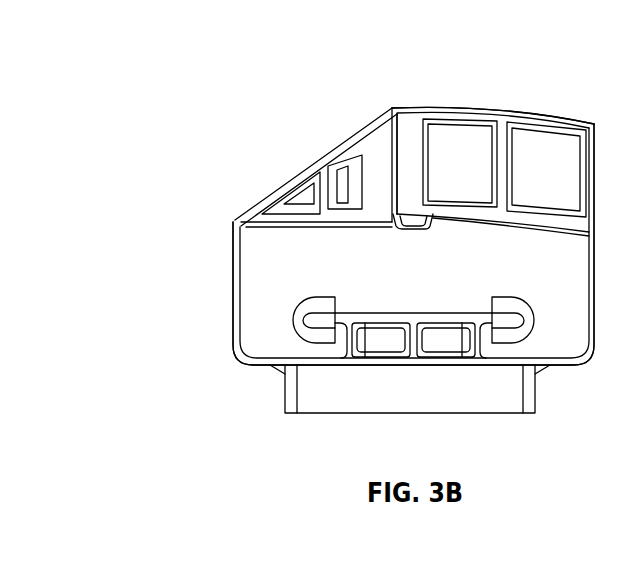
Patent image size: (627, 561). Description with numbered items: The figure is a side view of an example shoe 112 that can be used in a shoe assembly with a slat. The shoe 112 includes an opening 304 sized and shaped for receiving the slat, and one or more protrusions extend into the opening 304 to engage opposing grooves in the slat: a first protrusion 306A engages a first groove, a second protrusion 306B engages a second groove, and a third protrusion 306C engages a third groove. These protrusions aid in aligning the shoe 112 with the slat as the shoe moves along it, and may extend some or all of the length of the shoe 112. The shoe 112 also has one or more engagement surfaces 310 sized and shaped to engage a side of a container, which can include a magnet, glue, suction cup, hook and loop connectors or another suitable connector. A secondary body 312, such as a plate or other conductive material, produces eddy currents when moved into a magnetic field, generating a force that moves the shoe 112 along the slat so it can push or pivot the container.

The shoe 112 is at (213, 140).
The opening 304 is at (243, 253).
The engagement surfaces 310 is at (407, 118).
The first protrusion 306A is at (420, 231).
The second protrusion 306B is at (294, 321).
The third protrusion 306C is at (532, 322).
The secondary body 312 is at (498, 396).